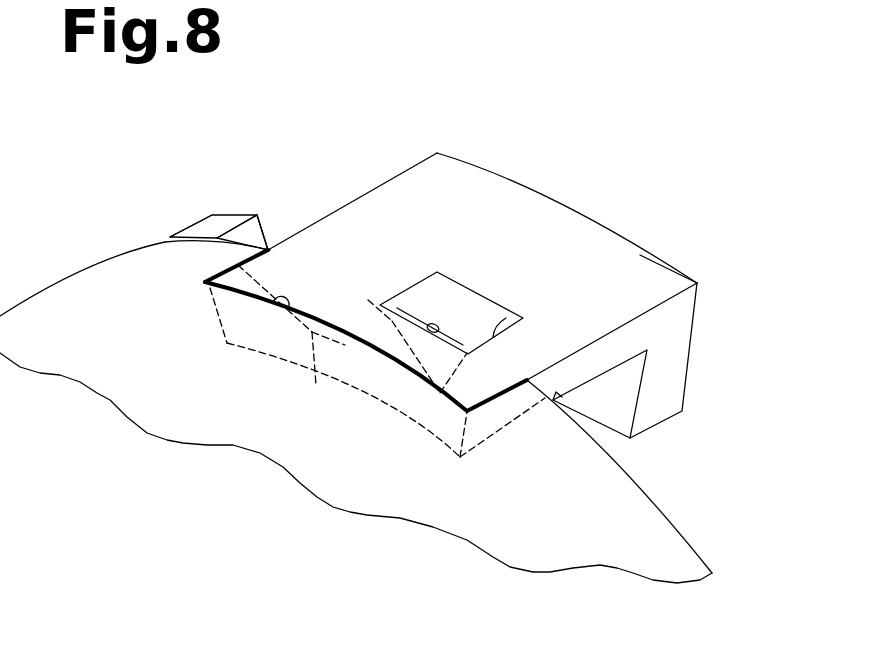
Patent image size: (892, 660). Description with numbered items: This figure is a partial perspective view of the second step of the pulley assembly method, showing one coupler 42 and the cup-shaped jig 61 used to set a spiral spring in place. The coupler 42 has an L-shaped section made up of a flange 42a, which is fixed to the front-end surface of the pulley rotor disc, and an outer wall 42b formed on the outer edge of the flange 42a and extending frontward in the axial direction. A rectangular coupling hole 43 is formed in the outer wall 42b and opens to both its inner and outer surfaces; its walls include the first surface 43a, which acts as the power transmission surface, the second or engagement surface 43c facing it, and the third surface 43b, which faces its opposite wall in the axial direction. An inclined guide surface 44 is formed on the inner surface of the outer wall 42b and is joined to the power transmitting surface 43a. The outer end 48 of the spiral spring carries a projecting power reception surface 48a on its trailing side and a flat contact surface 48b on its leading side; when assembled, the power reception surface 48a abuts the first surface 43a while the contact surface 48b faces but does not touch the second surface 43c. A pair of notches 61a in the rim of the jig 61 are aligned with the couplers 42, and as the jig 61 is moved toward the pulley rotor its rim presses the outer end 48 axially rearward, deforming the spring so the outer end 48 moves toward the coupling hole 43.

The coupler 42 is at (692, 343).
The flange 42a is at (663, 397).
The outer wall 42b is at (633, 333).
The coupling hole 43 is at (470, 315).
The first surface 43a is at (403, 300).
The third surface 43b is at (436, 333).
The second surface 43c is at (506, 318).
The inclined guide surface 44 is at (313, 350).
The outer end 48 is at (216, 236).
The power reception surface 48a is at (167, 234).
The contact surface 48b is at (254, 234).
The jig 61 is at (693, 540).
The notch 61a is at (276, 303).